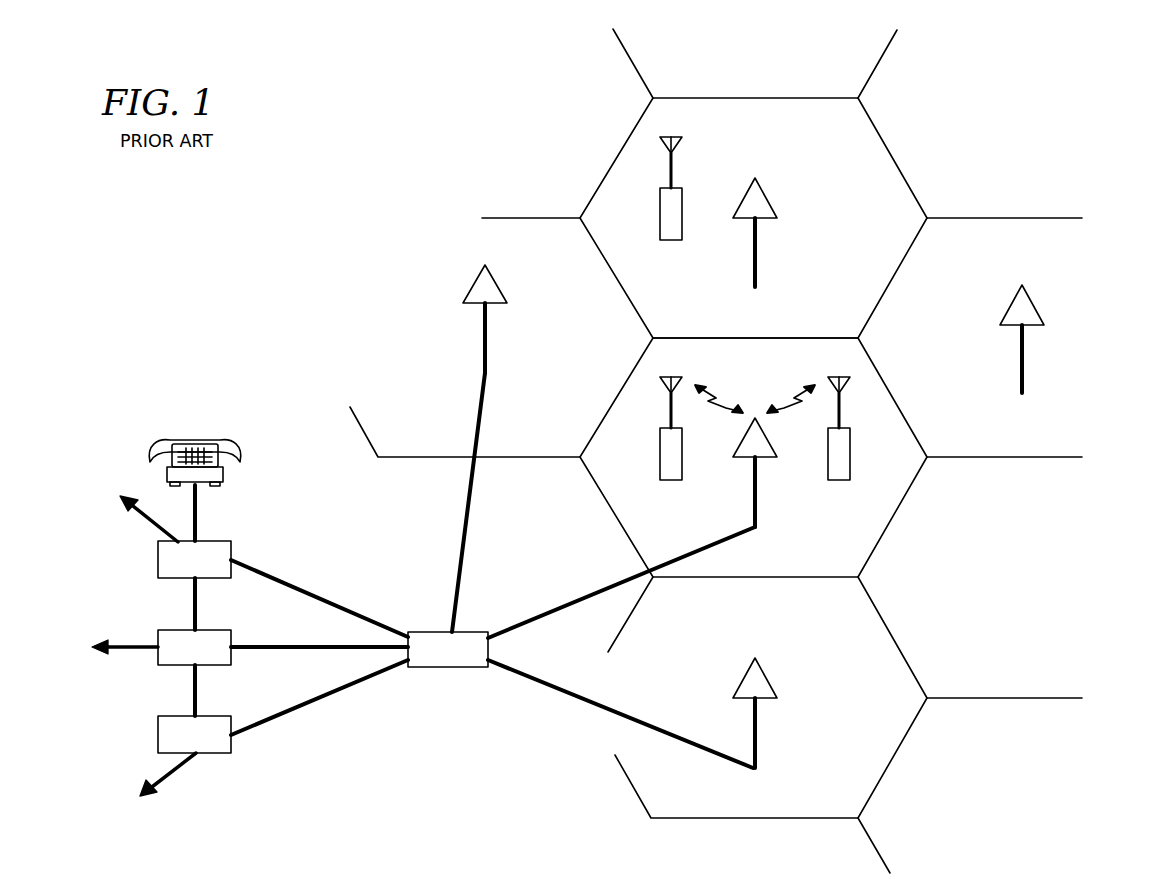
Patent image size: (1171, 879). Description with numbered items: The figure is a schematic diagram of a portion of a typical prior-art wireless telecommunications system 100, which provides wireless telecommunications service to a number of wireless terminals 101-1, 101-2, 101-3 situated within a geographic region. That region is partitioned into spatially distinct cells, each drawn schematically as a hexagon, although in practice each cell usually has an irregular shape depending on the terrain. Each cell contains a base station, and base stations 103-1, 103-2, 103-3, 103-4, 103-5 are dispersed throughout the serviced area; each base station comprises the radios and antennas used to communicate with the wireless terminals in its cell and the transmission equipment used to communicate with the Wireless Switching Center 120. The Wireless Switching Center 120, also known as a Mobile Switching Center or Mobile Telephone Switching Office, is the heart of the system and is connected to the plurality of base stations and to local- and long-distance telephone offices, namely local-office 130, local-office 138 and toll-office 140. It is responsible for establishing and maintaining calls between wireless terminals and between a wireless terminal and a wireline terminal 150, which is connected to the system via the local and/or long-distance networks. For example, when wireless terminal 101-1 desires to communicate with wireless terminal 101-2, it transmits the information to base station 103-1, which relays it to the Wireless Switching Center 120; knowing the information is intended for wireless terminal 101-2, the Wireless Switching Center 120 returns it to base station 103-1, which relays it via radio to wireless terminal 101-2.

The wireless telecommunications system 100 is at (184, 206).
The wireless terminal 101-1 is at (671, 482).
The wireless terminal 101-2 is at (839, 482).
The wireless terminal 101-3 is at (671, 242).
The base station 103-1 is at (757, 505).
The base station 103-2 is at (757, 258).
The base station 103-3 is at (488, 345).
The base station 103-4 is at (1025, 378).
The base station 103-5 is at (757, 743).
The Wireless Switching Center 120 is at (449, 668).
The local-office 130 is at (158, 552).
The local-office 138 is at (158, 735).
The toll-office 140 is at (158, 633).
The wireline terminal 150 is at (195, 433).